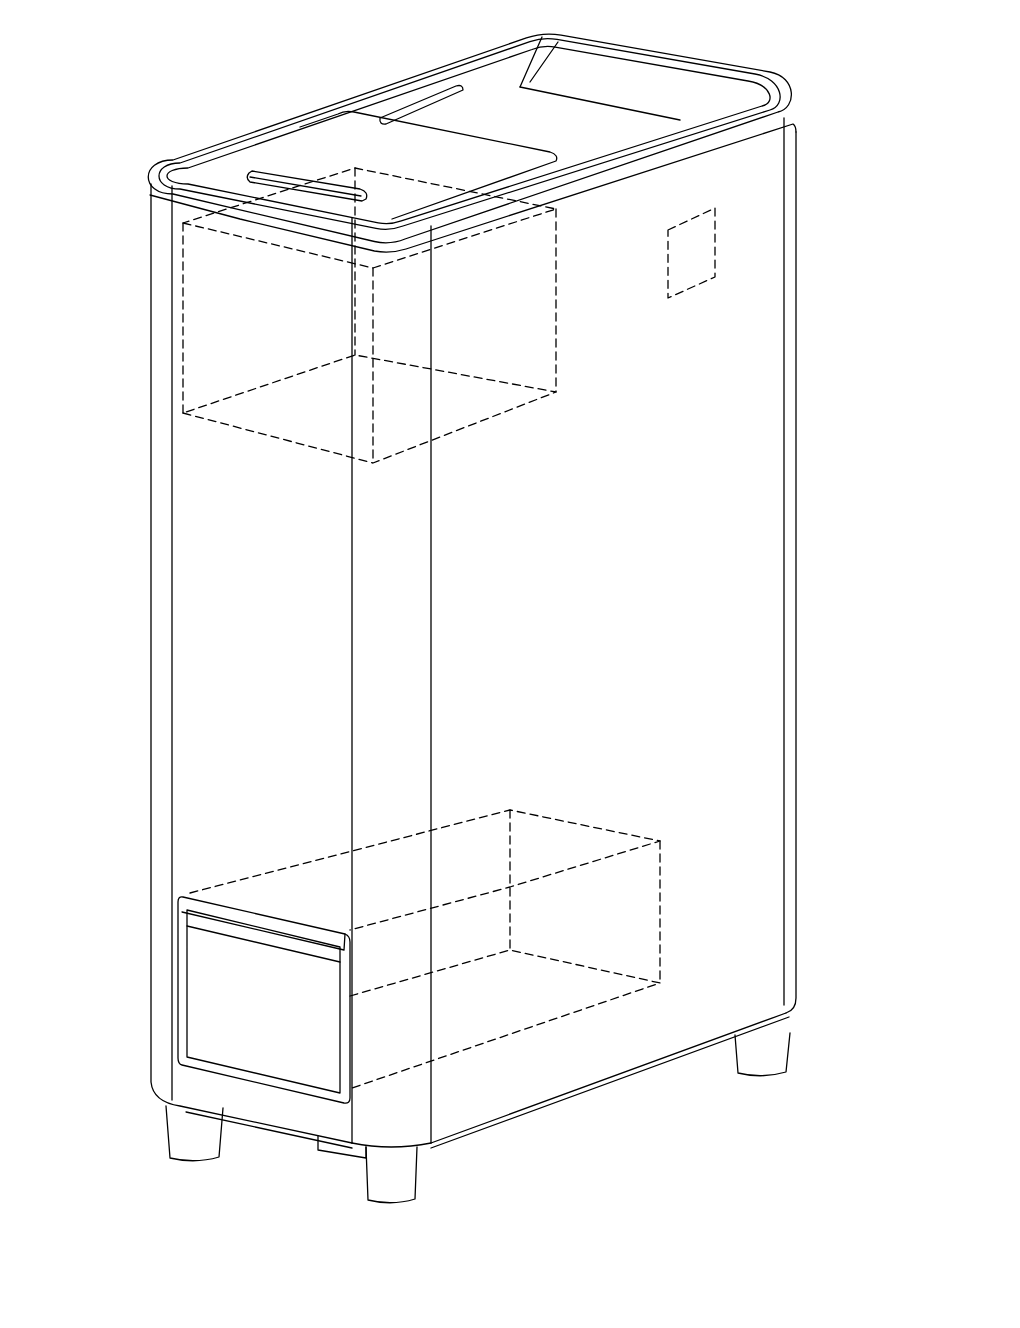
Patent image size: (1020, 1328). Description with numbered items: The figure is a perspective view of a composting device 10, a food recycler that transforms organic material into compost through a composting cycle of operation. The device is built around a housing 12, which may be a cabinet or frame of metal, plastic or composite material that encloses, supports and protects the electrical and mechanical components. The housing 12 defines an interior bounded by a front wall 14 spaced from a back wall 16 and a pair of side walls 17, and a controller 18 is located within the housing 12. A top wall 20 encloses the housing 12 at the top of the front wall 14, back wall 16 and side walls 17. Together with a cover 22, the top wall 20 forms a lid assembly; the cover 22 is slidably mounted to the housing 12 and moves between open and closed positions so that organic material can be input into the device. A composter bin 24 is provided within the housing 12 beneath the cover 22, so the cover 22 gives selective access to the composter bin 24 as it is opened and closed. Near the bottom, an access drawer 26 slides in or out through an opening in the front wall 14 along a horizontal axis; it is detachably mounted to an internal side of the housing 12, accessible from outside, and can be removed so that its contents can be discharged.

The composting device 10 is at (231, 50).
The housing 12 is at (811, 490).
The front wall 14 is at (248, 545).
The back wall 16 is at (796, 677).
The side walls 17 is at (662, 741).
The controller 18 is at (697, 285).
The top wall 20 is at (530, 113).
The cover 22 is at (307, 143).
The composter bin 24 is at (183, 332).
The access drawer 26 is at (220, 964).